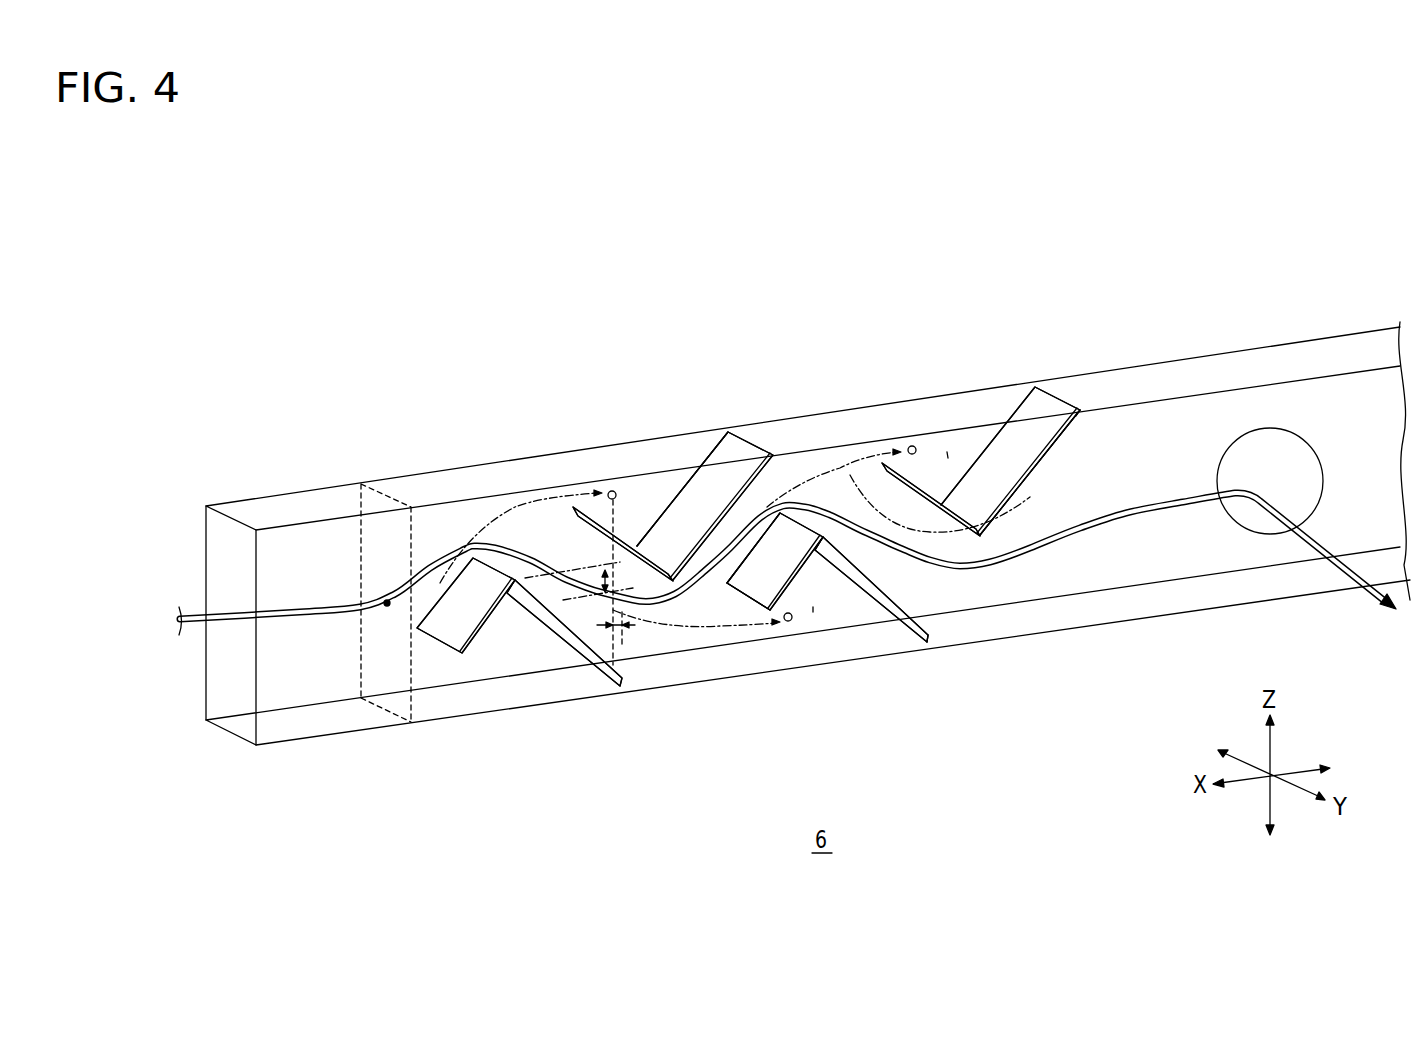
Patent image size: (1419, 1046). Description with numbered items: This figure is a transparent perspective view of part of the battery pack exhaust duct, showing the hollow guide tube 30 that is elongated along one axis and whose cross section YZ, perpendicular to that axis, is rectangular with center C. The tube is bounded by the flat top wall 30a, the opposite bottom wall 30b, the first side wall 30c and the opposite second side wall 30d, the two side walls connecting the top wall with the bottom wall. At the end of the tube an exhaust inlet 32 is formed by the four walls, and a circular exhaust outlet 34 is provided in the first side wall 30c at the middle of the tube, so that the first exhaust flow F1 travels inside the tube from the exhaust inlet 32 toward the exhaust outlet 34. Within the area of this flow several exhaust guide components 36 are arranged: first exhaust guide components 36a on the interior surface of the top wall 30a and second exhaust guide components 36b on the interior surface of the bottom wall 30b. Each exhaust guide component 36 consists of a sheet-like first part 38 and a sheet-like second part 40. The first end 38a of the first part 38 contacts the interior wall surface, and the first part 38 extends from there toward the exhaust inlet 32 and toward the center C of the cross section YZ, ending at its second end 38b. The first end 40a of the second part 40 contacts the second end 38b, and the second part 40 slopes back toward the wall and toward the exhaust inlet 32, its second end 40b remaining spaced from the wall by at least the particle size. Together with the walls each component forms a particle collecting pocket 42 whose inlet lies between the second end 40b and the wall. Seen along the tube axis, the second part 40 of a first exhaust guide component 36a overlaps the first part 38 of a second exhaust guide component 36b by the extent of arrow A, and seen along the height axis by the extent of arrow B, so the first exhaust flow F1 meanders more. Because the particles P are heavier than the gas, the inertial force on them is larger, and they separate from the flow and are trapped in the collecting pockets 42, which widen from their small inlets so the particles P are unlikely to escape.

The guide tube 30 is at (771, 553).
The top wall 30a is at (280, 508).
The bottom wall 30b is at (246, 724).
The first side wall 30c is at (328, 688).
The second side wall 30d is at (228, 552).
The exhaust inlet 32 is at (205, 656).
The exhaust outlet 34 is at (1252, 537).
The exhaust guide component 36 is at (748, 545).
The first exhaust guide component 36a is at (753, 432).
The second exhaust guide component 36b is at (893, 630).
The first part 38 is at (705, 478).
The first end 38a is at (1085, 413).
The second end 38b is at (993, 533).
The second part 40 is at (572, 525).
The first end 40a is at (842, 450).
The second end 40b is at (882, 470).
The particle collecting pocket 42 is at (948, 458).
The particles P is at (612, 490).
The arrow A is at (604, 572).
The arrow B is at (622, 625).
The center C is at (384, 603).
The first exhaust flow F1 is at (1143, 500).
The cross section YZ is at (428, 678).